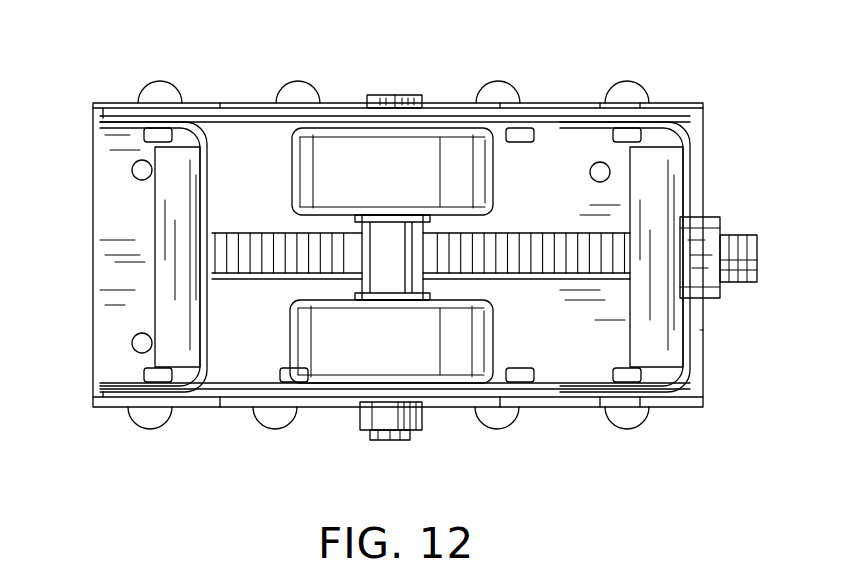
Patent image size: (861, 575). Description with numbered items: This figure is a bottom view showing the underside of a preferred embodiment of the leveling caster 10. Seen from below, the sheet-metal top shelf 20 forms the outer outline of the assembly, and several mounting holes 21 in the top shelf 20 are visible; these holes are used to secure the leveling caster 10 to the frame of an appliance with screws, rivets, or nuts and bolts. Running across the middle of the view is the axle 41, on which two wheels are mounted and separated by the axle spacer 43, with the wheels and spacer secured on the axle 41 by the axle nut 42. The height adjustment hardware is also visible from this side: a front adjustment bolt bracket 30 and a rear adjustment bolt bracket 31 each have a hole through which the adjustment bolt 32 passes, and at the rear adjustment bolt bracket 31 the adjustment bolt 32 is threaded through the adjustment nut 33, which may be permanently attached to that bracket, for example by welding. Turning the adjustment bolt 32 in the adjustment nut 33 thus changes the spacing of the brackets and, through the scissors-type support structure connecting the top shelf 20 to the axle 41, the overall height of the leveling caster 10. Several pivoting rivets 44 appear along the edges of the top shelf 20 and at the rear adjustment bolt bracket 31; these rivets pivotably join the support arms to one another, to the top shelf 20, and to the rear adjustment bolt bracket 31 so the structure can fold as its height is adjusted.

The leveling caster 10 is at (93, 62).
The top shelf 20 is at (135, 246).
The mounting holes 21 is at (134, 170).
The front adjustment bolt bracket 30 is at (175, 307).
The rear adjustment bolt bracket 31 is at (653, 181).
The adjustment bolt 32 is at (758, 247).
The adjustment nut 33 is at (722, 215).
The axle 41 is at (403, 98).
The axle nut 42 is at (383, 423).
The axle spacer 43 is at (383, 240).
The pivoting rivet 44 is at (290, 100).